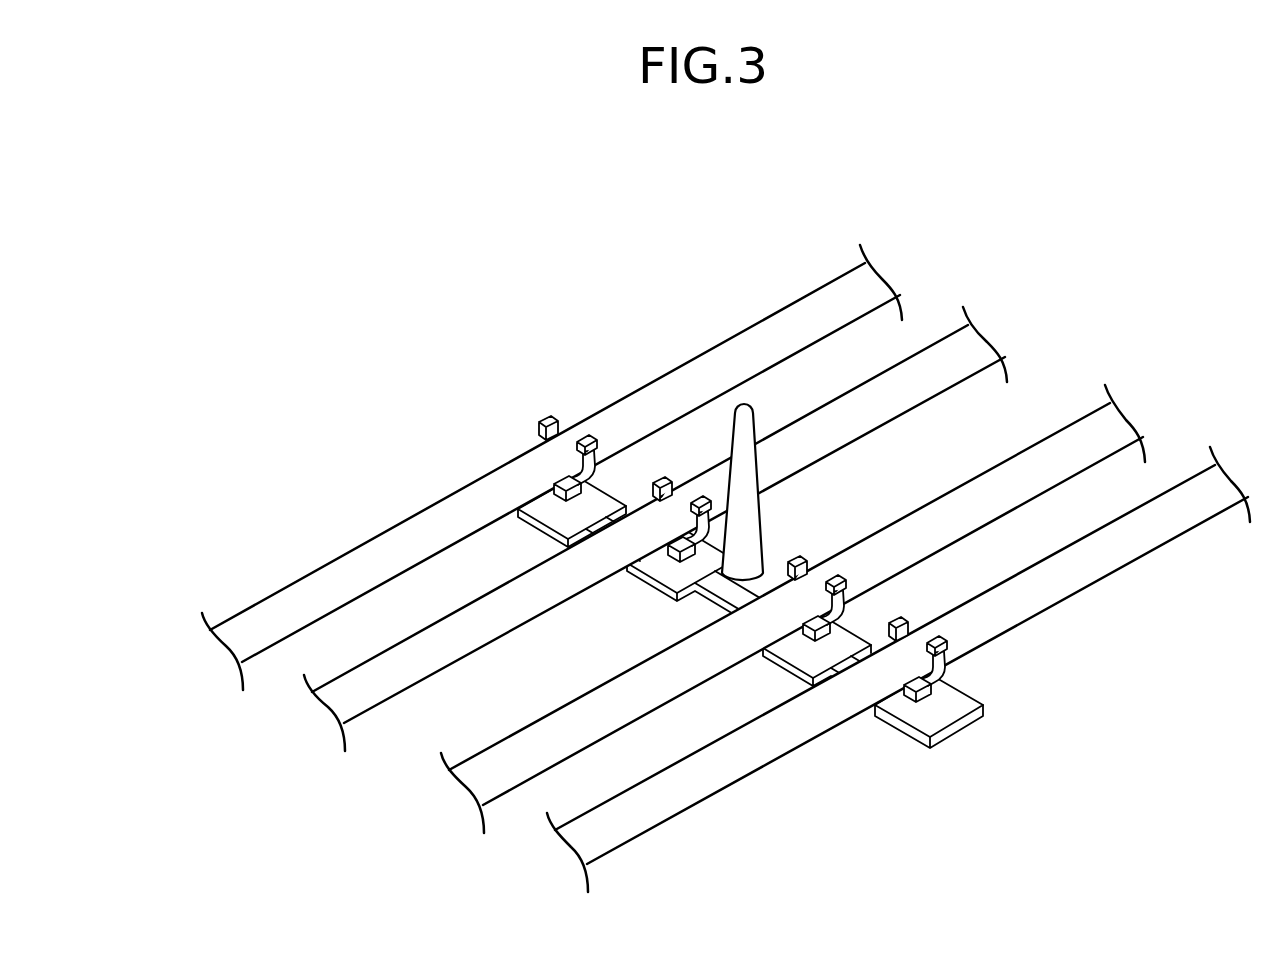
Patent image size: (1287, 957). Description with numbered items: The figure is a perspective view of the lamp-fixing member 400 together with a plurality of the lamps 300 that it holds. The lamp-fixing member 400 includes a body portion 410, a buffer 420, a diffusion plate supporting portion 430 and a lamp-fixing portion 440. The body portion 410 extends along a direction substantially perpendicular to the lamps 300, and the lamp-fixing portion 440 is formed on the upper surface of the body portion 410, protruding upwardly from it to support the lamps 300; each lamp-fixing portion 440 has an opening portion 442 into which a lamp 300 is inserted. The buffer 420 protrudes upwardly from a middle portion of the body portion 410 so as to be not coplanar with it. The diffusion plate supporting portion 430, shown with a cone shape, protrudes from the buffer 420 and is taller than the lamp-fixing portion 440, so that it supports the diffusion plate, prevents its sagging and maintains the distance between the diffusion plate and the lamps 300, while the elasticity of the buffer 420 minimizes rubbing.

The lamp 300 is at (722, 348).
The lamp-fixing member 400 is at (981, 740).
The body portion 410 is at (582, 519).
The buffer 420 is at (715, 582).
The diffusion plate supporting portion 430 is at (756, 527).
The lamp-fixing portion 440 is at (536, 432).
The opening portion 442 is at (566, 409).